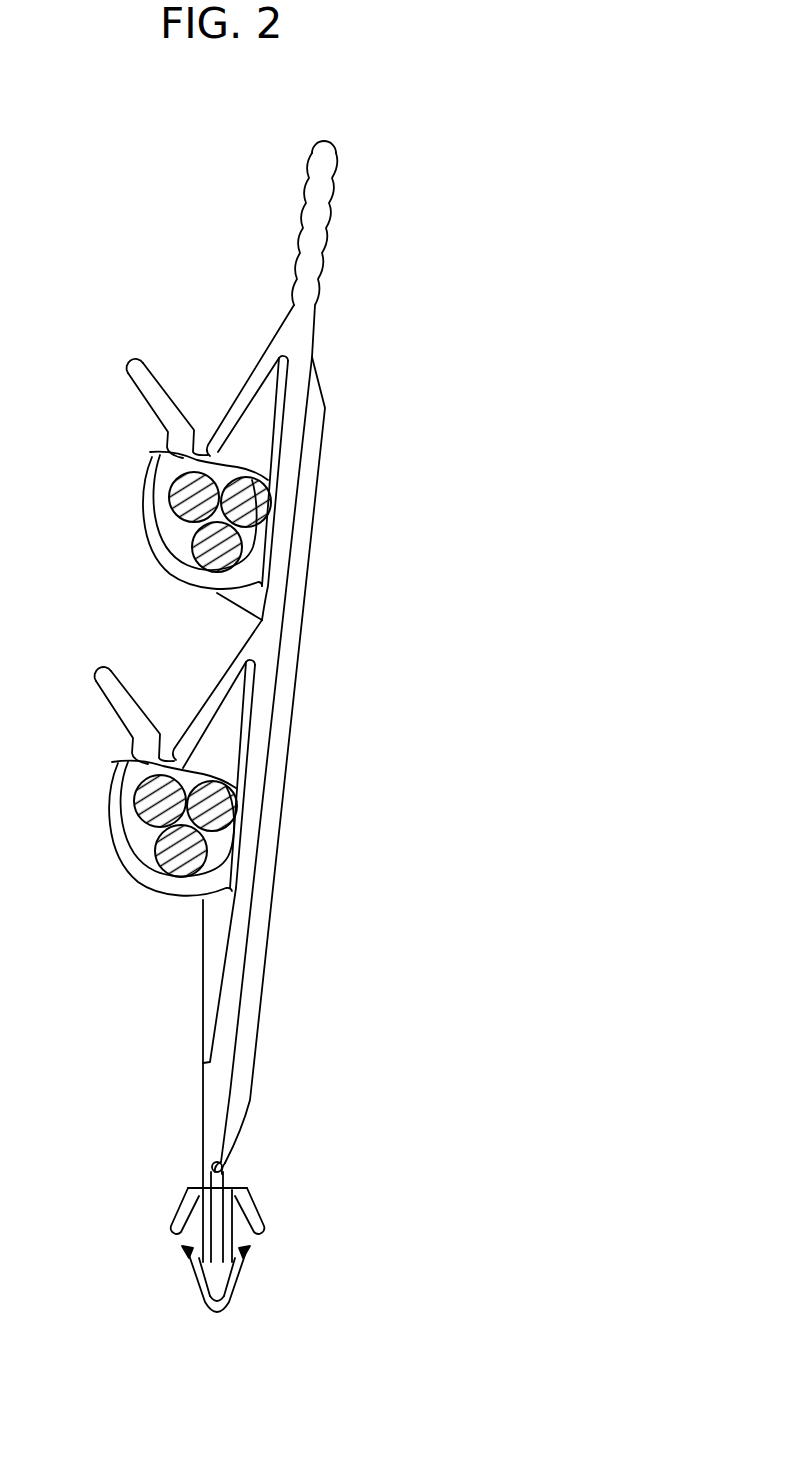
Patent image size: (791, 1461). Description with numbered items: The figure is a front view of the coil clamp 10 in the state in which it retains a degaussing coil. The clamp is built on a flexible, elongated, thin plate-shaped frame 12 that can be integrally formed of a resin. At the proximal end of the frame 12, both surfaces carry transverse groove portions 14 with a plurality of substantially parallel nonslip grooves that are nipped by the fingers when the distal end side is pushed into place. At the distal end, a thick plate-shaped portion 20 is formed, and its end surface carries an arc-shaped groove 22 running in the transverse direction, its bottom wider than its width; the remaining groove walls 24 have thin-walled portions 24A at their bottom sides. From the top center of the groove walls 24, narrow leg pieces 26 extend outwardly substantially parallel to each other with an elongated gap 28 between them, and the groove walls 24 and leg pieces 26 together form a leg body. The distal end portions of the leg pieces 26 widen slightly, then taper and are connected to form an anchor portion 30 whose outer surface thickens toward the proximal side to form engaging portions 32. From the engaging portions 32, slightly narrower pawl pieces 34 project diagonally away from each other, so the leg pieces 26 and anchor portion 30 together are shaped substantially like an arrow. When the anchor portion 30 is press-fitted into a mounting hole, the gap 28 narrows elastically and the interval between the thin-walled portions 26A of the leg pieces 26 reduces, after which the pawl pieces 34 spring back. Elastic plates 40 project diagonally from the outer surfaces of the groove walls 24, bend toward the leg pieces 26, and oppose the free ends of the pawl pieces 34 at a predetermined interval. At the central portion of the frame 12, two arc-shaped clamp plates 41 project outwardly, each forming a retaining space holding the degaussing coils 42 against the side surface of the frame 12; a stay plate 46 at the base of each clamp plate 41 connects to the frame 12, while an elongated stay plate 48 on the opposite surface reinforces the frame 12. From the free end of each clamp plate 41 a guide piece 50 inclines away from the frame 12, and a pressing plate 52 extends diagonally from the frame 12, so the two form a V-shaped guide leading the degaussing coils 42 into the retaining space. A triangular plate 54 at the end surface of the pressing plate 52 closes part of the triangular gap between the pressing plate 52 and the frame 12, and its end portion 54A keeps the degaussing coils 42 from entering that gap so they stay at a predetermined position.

The coil clamp 10 is at (382, 615).
The frame 12 is at (228, 978).
The transverse groove portions 14 is at (297, 235).
The plate-shaped portion 20 is at (207, 1085).
The groove 22 is at (248, 1122).
The groove walls 24 is at (202, 1170).
The thin-walled portions 24A is at (212, 1163).
The leg pieces 26 is at (223, 1222).
The thin-walled portions 26A is at (200, 1246).
The gap 28 is at (230, 1233).
The anchor portion 30 is at (242, 1305).
The engaging portions 32 is at (207, 1285).
The pawl pieces 34 is at (185, 1255).
The elastic plates 40 is at (165, 1210).
The clamp plates 41 is at (150, 555).
The degaussing coils 42 is at (227, 550).
The stay plate 46 is at (250, 600).
The elongated stay plate 48 is at (248, 1022).
The guide piece 50 is at (138, 395).
The pressing plate 52 is at (262, 365).
The triangular plate 54 is at (262, 407).
The end portion 54A is at (150, 452).